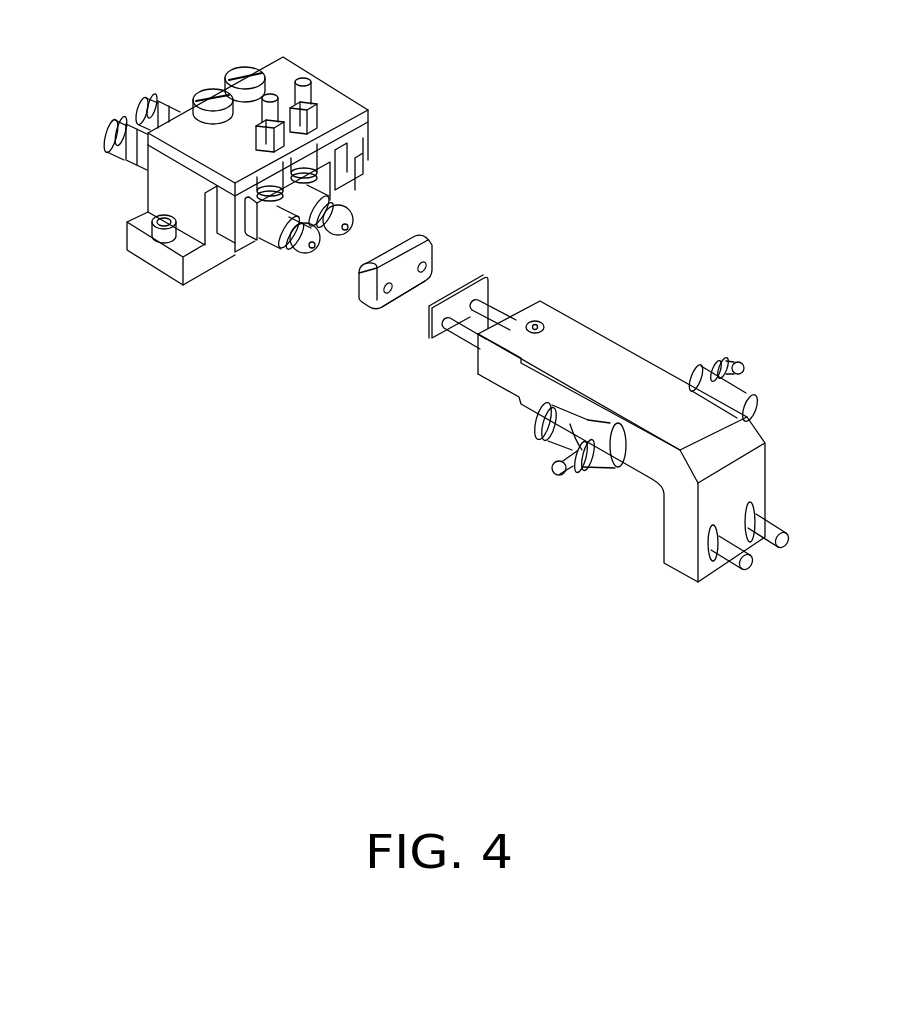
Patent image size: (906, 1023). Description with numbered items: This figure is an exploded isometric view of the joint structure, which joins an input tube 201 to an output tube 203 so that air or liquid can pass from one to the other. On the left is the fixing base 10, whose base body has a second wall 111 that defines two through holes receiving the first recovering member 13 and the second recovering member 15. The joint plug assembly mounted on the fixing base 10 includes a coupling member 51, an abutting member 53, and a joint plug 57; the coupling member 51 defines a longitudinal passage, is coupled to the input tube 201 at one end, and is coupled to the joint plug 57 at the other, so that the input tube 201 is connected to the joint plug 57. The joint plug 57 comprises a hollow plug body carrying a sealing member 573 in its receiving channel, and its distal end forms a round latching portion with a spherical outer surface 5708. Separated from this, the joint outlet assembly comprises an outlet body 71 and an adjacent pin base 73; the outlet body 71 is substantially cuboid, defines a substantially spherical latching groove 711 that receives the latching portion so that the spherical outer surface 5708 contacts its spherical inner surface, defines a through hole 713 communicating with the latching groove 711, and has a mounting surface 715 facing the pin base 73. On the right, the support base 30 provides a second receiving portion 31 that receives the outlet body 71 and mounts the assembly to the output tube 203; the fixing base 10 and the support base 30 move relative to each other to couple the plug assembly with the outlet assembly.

The fixing base 10 is at (294, 50).
The second wall 111 is at (183, 125).
The second recovering member 15 is at (242, 68).
The first recovering member 13 is at (306, 94).
The abutting member 53 is at (132, 146).
The input tube 201 is at (129, 95).
The joint plug 57 is at (308, 197).
The spherical outer surface 5708 is at (344, 212).
The sealing member 573 is at (353, 227).
The coupling member 51 is at (238, 224).
The outlet body 71 is at (297, 354).
The latching groove 711 is at (357, 257).
The through hole 713 is at (383, 292).
The mounting surface 715 is at (392, 303).
The pin base 73 is at (438, 334).
The support base 30 is at (640, 329).
The second receiving portion 31 is at (552, 311).
The output tube 203 is at (496, 306).